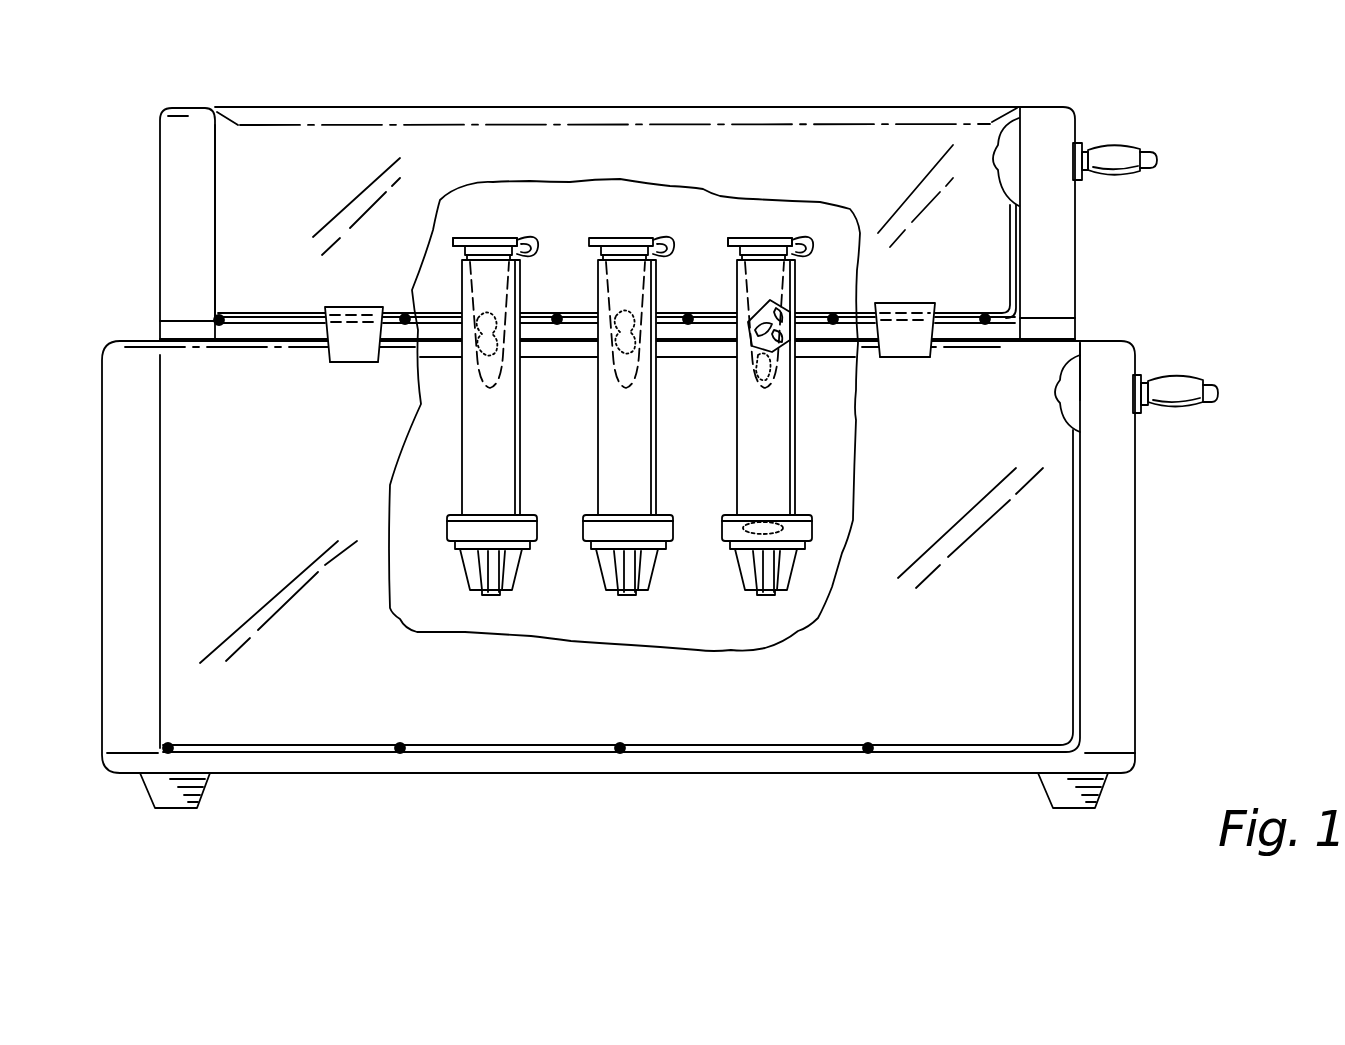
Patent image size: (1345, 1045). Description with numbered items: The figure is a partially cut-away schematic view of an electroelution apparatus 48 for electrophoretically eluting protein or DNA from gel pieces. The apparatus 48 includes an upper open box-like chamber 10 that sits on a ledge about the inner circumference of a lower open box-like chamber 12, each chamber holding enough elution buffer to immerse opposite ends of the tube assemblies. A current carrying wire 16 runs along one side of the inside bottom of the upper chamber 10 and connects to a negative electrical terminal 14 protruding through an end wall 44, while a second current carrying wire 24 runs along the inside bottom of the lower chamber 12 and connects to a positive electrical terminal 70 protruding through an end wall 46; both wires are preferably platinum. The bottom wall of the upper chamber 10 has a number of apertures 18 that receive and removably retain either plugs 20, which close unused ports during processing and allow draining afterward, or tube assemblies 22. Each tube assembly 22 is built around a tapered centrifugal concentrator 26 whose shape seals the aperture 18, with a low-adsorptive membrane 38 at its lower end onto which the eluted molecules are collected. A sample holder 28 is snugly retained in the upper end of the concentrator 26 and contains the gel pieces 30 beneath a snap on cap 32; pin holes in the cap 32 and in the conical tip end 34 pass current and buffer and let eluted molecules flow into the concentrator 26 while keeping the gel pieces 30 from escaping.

The upper open box-like chamber 10 is at (160, 207).
The lower open box-like chamber 12 is at (118, 525).
The negative electrical terminal 14 is at (1112, 148).
The current carrying wire 16 is at (986, 305).
The apertures 18 is at (325, 316).
The plugs 20 is at (346, 364).
The tube assemblies 22 is at (690, 588).
The current carrying wire 24 is at (948, 740).
The centrifugal concentrator 26 is at (800, 405).
The sample holder 28 is at (760, 303).
The gel pieces 30 is at (785, 312).
The snap on cap 32 is at (496, 238).
The conical tip end 34 is at (752, 398).
The low-adsorptive membrane 38 is at (812, 520).
The end wall 44 is at (1078, 225).
The end wall 46 is at (1137, 538).
The electroelution apparatus 48 is at (488, 74).
The positive electrical terminal 70 is at (1172, 380).